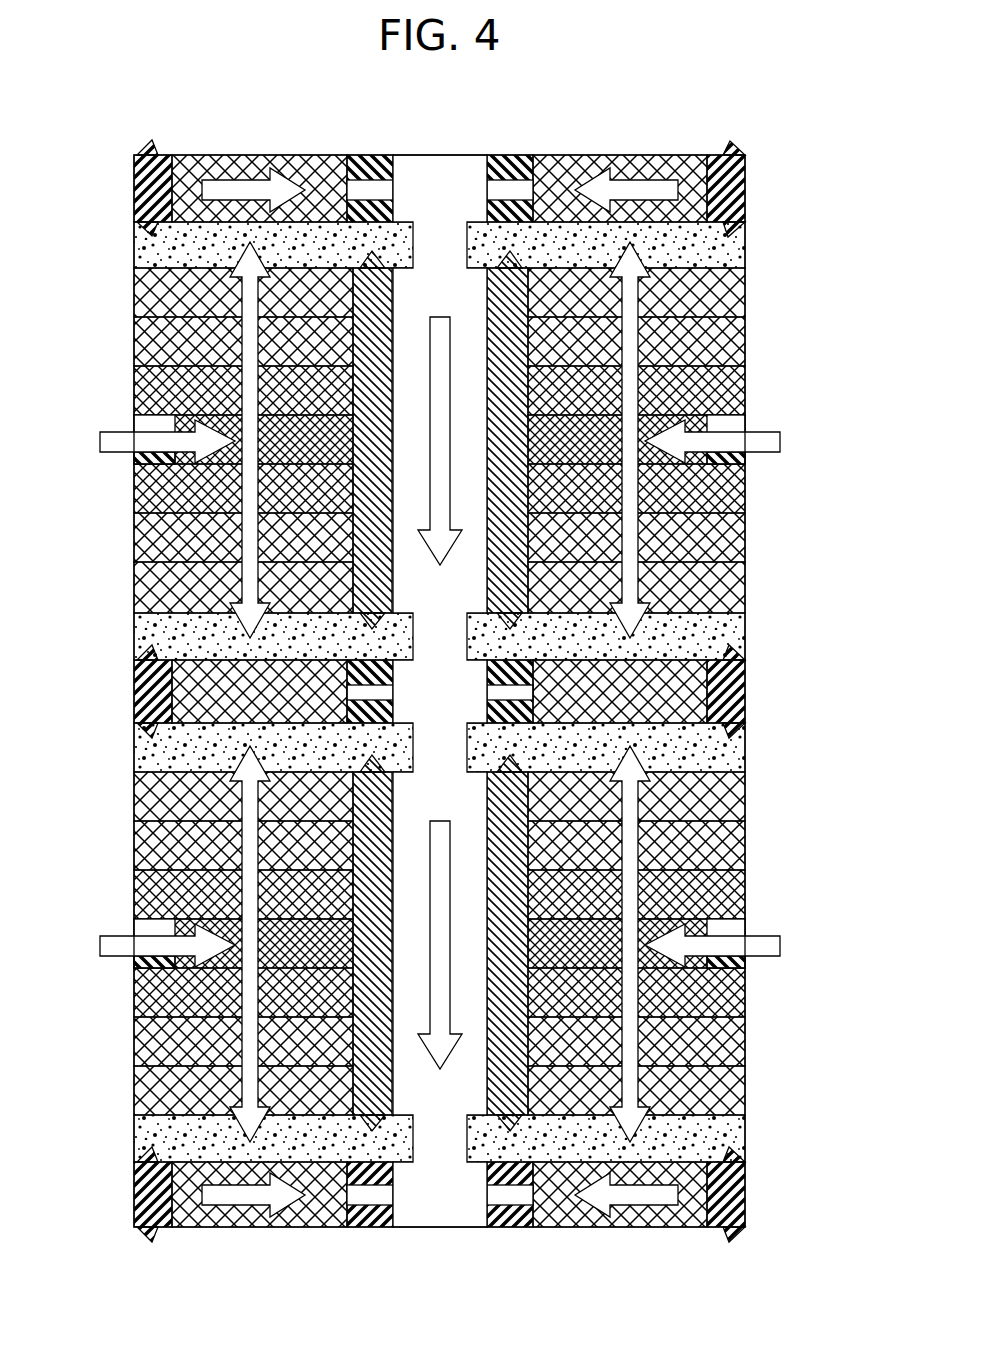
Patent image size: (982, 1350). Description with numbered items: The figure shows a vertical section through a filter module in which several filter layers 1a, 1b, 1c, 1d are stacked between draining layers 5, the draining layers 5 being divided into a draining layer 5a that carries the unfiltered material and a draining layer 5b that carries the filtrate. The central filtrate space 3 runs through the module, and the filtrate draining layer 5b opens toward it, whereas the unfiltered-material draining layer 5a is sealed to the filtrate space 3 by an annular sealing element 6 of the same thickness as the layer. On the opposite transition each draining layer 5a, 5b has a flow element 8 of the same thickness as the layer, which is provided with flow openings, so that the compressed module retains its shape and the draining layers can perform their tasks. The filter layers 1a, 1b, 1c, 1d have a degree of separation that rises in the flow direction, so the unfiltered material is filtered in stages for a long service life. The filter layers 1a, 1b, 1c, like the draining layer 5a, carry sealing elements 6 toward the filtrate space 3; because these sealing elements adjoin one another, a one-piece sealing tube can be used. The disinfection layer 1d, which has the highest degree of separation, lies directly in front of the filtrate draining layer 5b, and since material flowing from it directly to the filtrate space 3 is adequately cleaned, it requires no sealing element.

The filter layer 1a is at (737, 390).
The filter layer 1b is at (737, 342).
The filter layer 1c is at (737, 294).
The disinfection layer 1d is at (735, 245).
The filtrate space 3 is at (437, 1212).
The draining layer 5 is at (442, 697).
The draining layer for unfiltered material 5a is at (237, 155).
The draining layer for filtrate 5b is at (175, 707).
The sealing element 6 is at (134, 183).
The flow element 8 is at (378, 155).